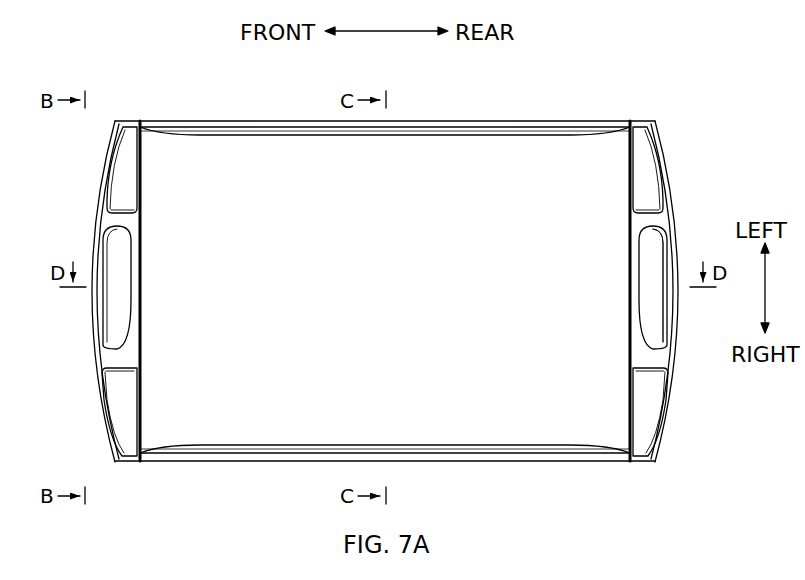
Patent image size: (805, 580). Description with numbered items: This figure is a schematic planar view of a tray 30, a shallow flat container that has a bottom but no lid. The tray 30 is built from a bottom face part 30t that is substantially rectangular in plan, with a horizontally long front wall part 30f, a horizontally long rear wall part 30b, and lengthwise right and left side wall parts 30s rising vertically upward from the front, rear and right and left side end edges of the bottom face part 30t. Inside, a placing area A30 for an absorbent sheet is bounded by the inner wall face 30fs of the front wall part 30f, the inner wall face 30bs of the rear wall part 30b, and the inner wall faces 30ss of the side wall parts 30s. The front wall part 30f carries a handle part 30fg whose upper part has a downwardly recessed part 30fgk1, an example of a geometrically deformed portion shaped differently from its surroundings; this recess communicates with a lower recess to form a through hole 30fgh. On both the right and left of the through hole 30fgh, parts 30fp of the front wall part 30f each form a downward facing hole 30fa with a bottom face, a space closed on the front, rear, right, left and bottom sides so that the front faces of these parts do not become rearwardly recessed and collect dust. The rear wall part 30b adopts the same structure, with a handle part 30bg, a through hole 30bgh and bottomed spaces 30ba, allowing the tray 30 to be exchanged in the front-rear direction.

The tray 30 is at (390, 278).
The bottom face part 30t is at (289, 170).
The side wall part 30s is at (197, 122).
The inner wall face of side wall part 30ss is at (233, 136).
The placing area A30 is at (406, 304).
The front wall part 30f is at (124, 262).
The inner wall face of front wall part 30fs is at (145, 290).
The downward facing hole 30fa is at (129, 262).
The part on side of through hole 30fp is at (130, 172).
The handle part 30fg is at (92, 265).
The recessed part 30fgk1 is at (79, 376).
The through hole 30fgh is at (119, 412).
The rear wall part 30b is at (648, 291).
The inner wall face of rear wall part 30bs is at (627, 290).
The space having bottom 30ba is at (641, 176).
The handle part 30bg is at (683, 265).
The through hole 30bgh is at (656, 312).